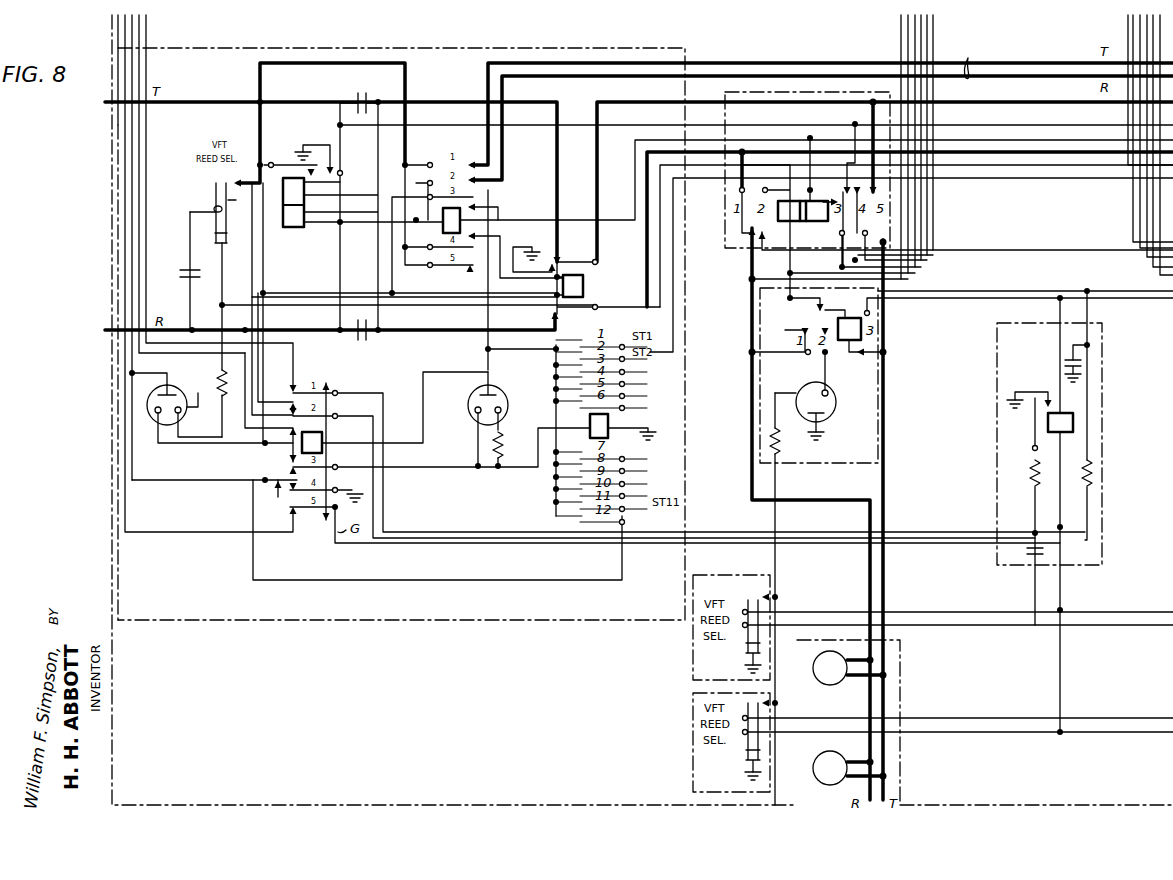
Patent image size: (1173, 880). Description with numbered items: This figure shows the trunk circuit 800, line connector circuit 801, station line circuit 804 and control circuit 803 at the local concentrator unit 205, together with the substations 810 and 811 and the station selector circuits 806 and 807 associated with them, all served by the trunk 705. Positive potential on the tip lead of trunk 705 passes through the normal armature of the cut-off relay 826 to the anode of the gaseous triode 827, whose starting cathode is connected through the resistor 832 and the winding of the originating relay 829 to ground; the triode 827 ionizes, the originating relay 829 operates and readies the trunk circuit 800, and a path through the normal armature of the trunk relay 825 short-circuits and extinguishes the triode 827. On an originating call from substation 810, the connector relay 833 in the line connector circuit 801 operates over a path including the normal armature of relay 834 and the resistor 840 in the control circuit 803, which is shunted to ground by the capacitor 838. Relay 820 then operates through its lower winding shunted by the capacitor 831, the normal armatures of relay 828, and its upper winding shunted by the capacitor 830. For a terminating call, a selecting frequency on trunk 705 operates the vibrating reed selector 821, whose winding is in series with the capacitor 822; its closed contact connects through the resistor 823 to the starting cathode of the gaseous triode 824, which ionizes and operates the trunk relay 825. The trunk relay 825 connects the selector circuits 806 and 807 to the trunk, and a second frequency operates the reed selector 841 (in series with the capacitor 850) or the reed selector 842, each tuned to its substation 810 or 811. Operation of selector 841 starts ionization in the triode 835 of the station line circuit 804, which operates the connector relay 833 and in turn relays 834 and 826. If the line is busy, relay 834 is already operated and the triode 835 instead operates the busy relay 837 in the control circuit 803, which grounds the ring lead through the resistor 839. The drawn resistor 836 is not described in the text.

The local concentrator unit 205 is at (258, 798).
The trunk 705 is at (968, 58).
The trunk circuit 800 is at (401, 334).
The line connector circuit 801 is at (735, 92).
The control circuit 803 is at (990, 408).
The station line circuit 804 is at (838, 463).
The station selector circuit 806 is at (686, 668).
The station selector circuit 807 is at (686, 766).
The substation 810 is at (818, 684).
The substation 811 is at (818, 754).
The relay 820 is at (284, 234).
The vibrating reed selector 821 is at (216, 208).
The capacitor 822 is at (180, 271).
The resistor 823 is at (218, 382).
The gaseous triode 824 is at (220, 414).
The trunk relay 825 is at (322, 440).
The cut-off relay 826 is at (440, 231).
The gaseous triode 827 is at (504, 391).
The relay 828 is at (583, 286).
The originating relay 829 is at (608, 420).
The capacitor 830 is at (359, 95).
The capacitor 831 is at (362, 339).
The resistor 832 is at (508, 436).
The connector relay 833 is at (796, 224).
The relay 834 is at (849, 342).
The triode 835 is at (836, 403).
The resistor 836 is at (786, 447).
The busy relay 837 is at (1060, 413).
The capacitor 838 is at (1064, 363).
The resistor 839 is at (1028, 470).
The resistor 840 is at (1082, 472).
The vibrating reed selector 841 is at (748, 644).
The vibrating reed selector 842 is at (748, 749).
The capacitor 850 is at (1026, 556).